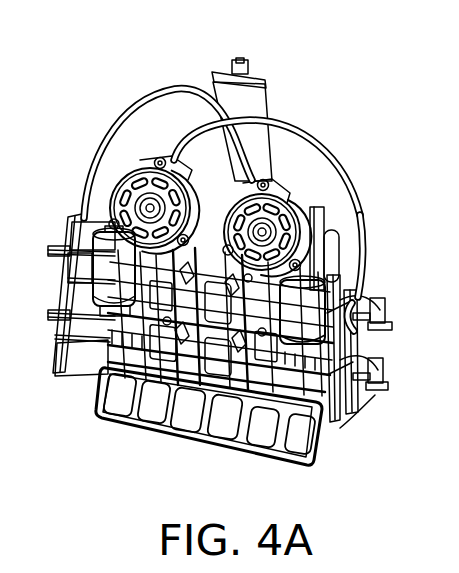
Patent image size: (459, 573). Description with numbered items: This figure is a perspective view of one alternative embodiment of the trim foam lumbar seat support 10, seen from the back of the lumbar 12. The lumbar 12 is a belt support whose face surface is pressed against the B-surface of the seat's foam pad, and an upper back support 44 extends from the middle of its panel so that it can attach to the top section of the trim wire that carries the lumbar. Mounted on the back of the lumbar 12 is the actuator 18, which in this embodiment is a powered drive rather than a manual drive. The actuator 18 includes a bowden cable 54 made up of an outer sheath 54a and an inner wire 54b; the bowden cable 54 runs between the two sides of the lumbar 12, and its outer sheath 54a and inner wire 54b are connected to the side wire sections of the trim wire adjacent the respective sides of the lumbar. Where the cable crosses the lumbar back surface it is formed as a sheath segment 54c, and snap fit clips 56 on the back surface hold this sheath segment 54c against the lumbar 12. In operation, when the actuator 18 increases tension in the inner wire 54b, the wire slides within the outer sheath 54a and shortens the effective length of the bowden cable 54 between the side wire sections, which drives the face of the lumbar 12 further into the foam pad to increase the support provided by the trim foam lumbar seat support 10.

The trim foam lumbar seat support 10 is at (233, 255).
The lumbar 12 is at (301, 459).
The actuator 18 is at (172, 160).
The upper back support 44 is at (263, 100).
The bowden cable 54 is at (119, 114).
The outer sheath 54a is at (343, 182).
The inner wire 54b is at (365, 300).
The sheath segment 54c is at (362, 328).
The snap fit clips 56 is at (148, 388).